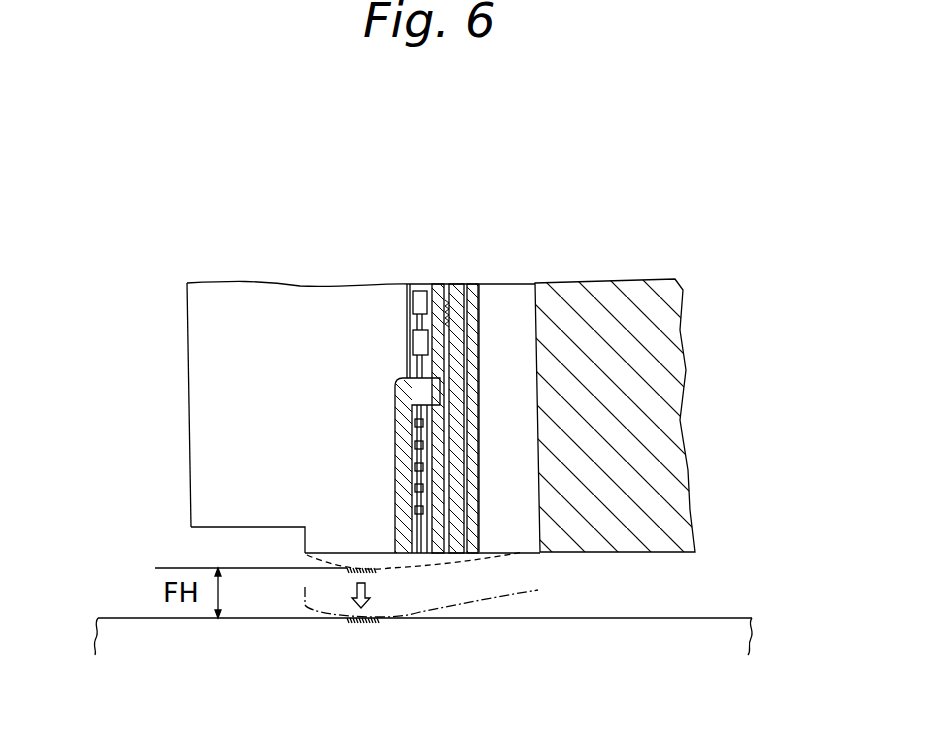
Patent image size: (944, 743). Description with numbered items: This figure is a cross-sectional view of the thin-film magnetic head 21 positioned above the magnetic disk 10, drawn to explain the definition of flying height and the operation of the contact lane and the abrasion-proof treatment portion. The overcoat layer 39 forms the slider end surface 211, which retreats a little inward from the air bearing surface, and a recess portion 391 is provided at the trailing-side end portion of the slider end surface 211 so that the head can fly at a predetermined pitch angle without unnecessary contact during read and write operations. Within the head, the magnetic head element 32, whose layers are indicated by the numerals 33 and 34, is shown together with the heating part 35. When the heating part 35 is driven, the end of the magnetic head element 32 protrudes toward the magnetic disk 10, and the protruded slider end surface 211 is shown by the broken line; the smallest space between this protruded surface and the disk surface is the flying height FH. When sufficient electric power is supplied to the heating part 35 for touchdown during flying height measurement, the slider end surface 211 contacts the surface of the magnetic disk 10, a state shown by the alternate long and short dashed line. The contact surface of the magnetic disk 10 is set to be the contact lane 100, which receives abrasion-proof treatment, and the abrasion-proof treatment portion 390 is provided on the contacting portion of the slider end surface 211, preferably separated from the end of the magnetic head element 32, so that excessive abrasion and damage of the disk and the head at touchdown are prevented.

The magnetic disk 10 is at (698, 647).
The thin-film magnetic head 21 is at (618, 273).
The slider end surface 211 is at (495, 557).
The magnetic head element 32 is at (407, 335).
The substrate layer 33 is at (451, 280).
The electrode layer 34 is at (386, 396).
The heating part 35 is at (450, 328).
The overcoat layer 39 is at (228, 359).
The abrasion-proof treatment portion 390 is at (373, 572).
The recess portion 391 is at (205, 528).
The contact lane 100 is at (362, 622).